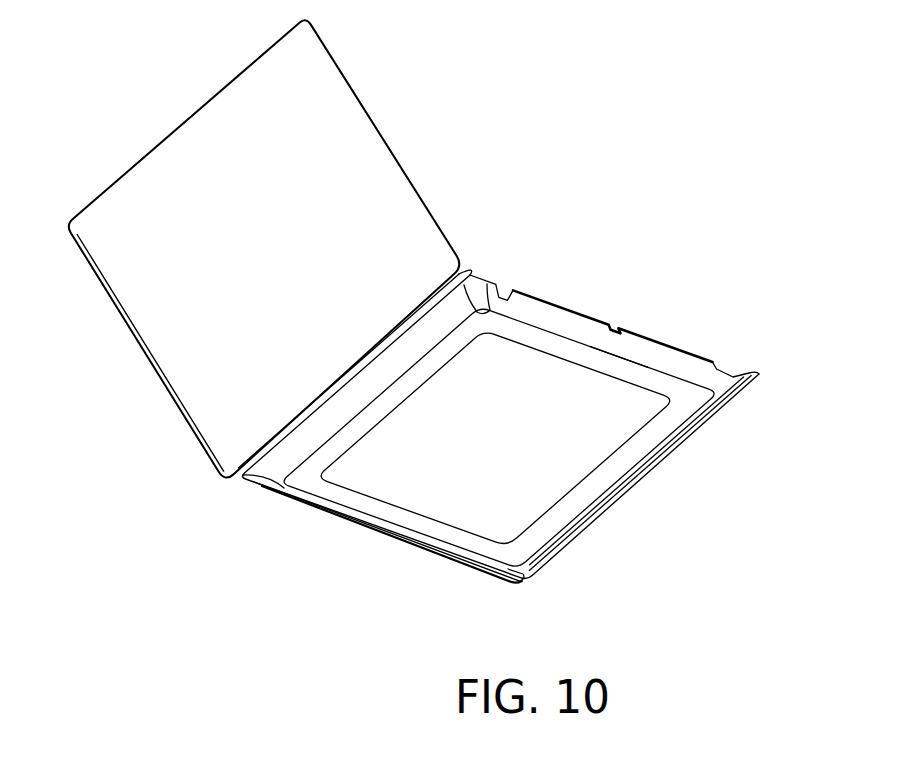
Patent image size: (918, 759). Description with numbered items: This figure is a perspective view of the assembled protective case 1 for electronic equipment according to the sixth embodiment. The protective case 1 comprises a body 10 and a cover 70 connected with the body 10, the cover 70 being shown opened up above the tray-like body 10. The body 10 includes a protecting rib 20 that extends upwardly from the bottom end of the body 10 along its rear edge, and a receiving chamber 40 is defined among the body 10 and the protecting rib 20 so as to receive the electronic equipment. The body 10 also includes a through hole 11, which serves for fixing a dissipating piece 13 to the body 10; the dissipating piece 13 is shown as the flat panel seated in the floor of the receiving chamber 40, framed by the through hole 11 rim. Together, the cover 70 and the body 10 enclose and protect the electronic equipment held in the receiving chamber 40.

The protective case 1 is at (115, 65).
The body 10 is at (675, 418).
The through hole 11 is at (617, 460).
The dissipating piece 13 is at (538, 502).
The protecting rib 20 is at (572, 322).
The receiving chamber 40 is at (648, 367).
The cover 70 is at (408, 222).